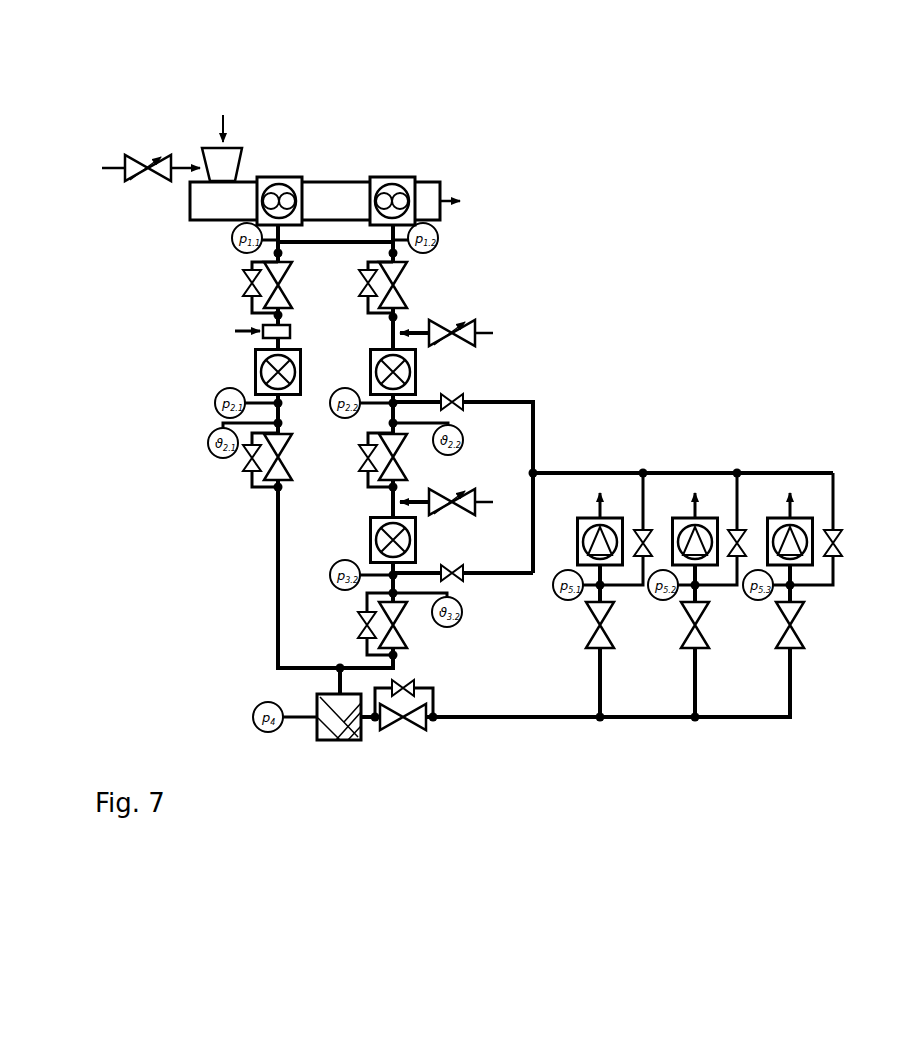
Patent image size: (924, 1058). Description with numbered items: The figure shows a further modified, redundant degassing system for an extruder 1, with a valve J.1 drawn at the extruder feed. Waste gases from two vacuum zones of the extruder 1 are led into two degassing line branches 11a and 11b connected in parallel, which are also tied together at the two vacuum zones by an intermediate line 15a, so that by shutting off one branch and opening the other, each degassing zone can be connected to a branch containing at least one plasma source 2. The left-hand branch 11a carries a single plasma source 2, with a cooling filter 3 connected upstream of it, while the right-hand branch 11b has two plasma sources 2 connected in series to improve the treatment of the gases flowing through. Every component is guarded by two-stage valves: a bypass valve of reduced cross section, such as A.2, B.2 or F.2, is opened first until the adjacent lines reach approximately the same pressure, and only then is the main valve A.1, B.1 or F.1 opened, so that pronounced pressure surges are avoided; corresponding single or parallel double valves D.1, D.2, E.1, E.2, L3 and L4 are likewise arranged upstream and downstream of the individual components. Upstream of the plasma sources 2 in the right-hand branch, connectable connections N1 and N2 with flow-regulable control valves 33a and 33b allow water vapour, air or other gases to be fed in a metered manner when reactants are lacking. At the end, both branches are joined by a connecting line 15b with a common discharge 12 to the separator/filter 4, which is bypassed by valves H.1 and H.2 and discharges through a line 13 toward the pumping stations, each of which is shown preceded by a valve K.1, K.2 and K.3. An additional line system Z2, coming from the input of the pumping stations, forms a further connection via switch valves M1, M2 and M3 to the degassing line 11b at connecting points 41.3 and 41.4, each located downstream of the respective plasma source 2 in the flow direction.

The extruder 1 is at (245, 162).
The feed control valve J.1 is at (142, 154).
The intermediate line 15a is at (335, 238).
The line branch 11a is at (247, 263).
The line branch 11b is at (362, 260).
The main valve A.1 is at (294, 285).
The bypass valve A.2 is at (242, 285).
The valve D.1 is at (409, 285).
The bypass valve D.2 is at (358, 283).
The cooling filter 3 is at (261, 343).
The plasma source 2 is at (254, 373).
The connecting point 41.3 is at (400, 320).
The control valve 33a is at (445, 318).
The connectable connection N1 is at (487, 328).
The valve L3 is at (452, 392).
The main valve B.1 is at (294, 457).
The bypass valve B.2 is at (242, 458).
The valve E.1 is at (388, 493).
The bypass valve E.2 is at (358, 458).
The connecting point 41.4 is at (388, 502).
The connectable connection N2 is at (487, 497).
The control valve 33b is at (445, 487).
The valve L4 is at (452, 584).
The main valve F.1 is at (409, 625).
The bypass valve F.2 is at (357, 625).
The connecting line 15b is at (313, 663).
The collecting line 12 is at (336, 680).
The separator/filter 4 is at (340, 746).
The valve H.1 is at (403, 733).
The bypass valve H.2 is at (403, 679).
The distribution line 13 is at (557, 723).
The line system Z2 is at (805, 468).
The switch valve M1 is at (653, 543).
The switch valve M2 is at (747, 543).
The switch valve M3 is at (843, 543).
The valve K.1 is at (614, 623).
The valve K.2 is at (709, 623).
The valve K.3 is at (804, 623).